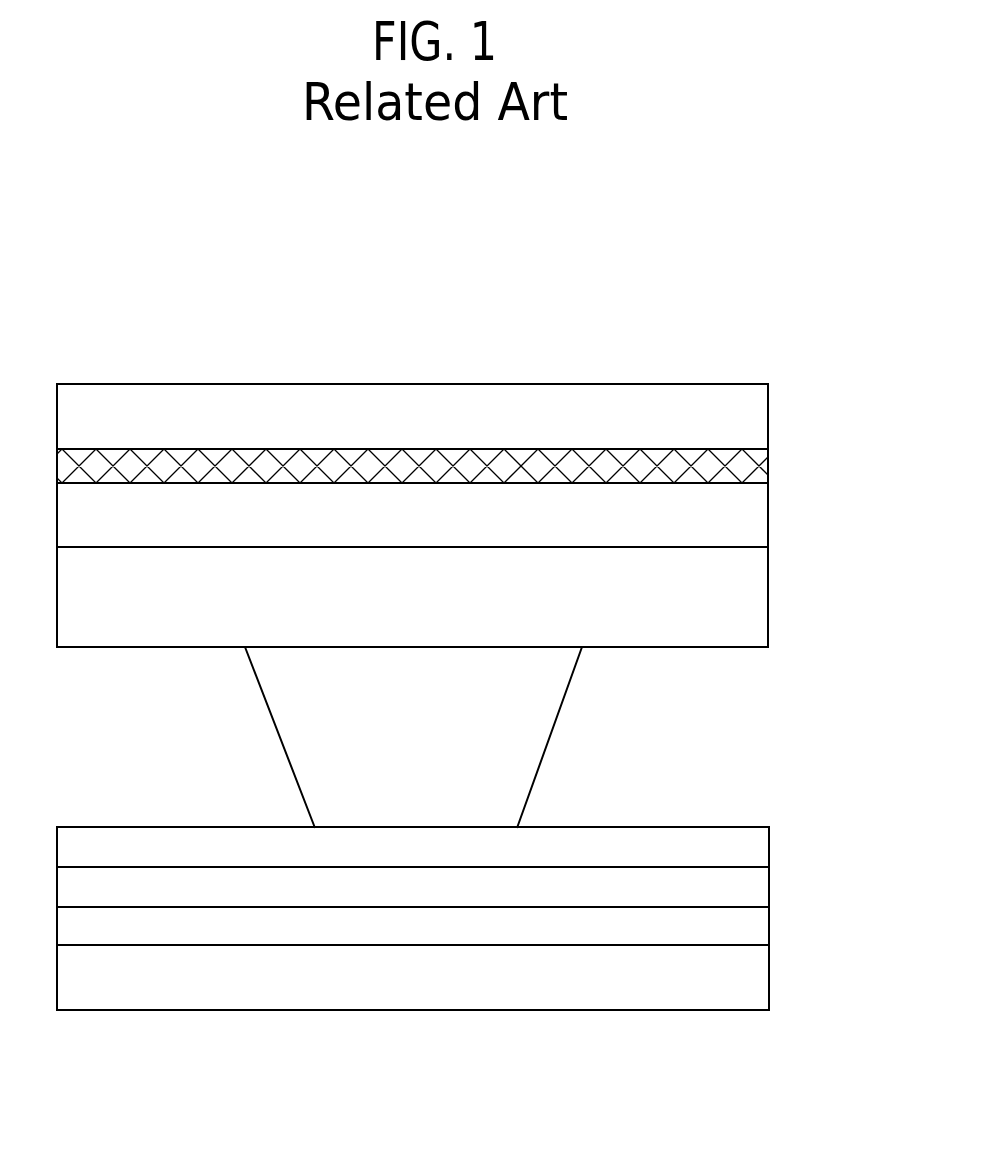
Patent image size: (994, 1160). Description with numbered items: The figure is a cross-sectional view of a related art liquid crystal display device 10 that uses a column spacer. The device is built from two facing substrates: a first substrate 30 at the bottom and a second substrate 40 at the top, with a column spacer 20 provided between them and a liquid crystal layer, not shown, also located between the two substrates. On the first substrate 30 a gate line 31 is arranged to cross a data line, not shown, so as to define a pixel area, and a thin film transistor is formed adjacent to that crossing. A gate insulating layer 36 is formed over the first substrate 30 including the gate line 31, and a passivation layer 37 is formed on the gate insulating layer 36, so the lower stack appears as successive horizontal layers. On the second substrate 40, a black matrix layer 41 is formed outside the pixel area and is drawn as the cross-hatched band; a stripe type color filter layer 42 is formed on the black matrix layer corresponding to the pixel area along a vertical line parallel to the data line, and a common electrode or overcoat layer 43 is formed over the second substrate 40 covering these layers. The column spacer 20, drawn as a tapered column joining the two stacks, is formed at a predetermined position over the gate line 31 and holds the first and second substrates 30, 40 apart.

The liquid crystal display device 10 is at (740, 310).
The column spacer 20 is at (535, 743).
The first substrate 30 is at (755, 987).
The gate line 31 is at (755, 935).
The gate insulating layer 36 is at (755, 893).
The passivation layer 37 is at (755, 855).
The second substrate 40 is at (750, 428).
The black matrix layer 41 is at (750, 480).
The stripe type color filter layer 42 is at (750, 533).
The common electrode or overcoat layer 43 is at (750, 612).